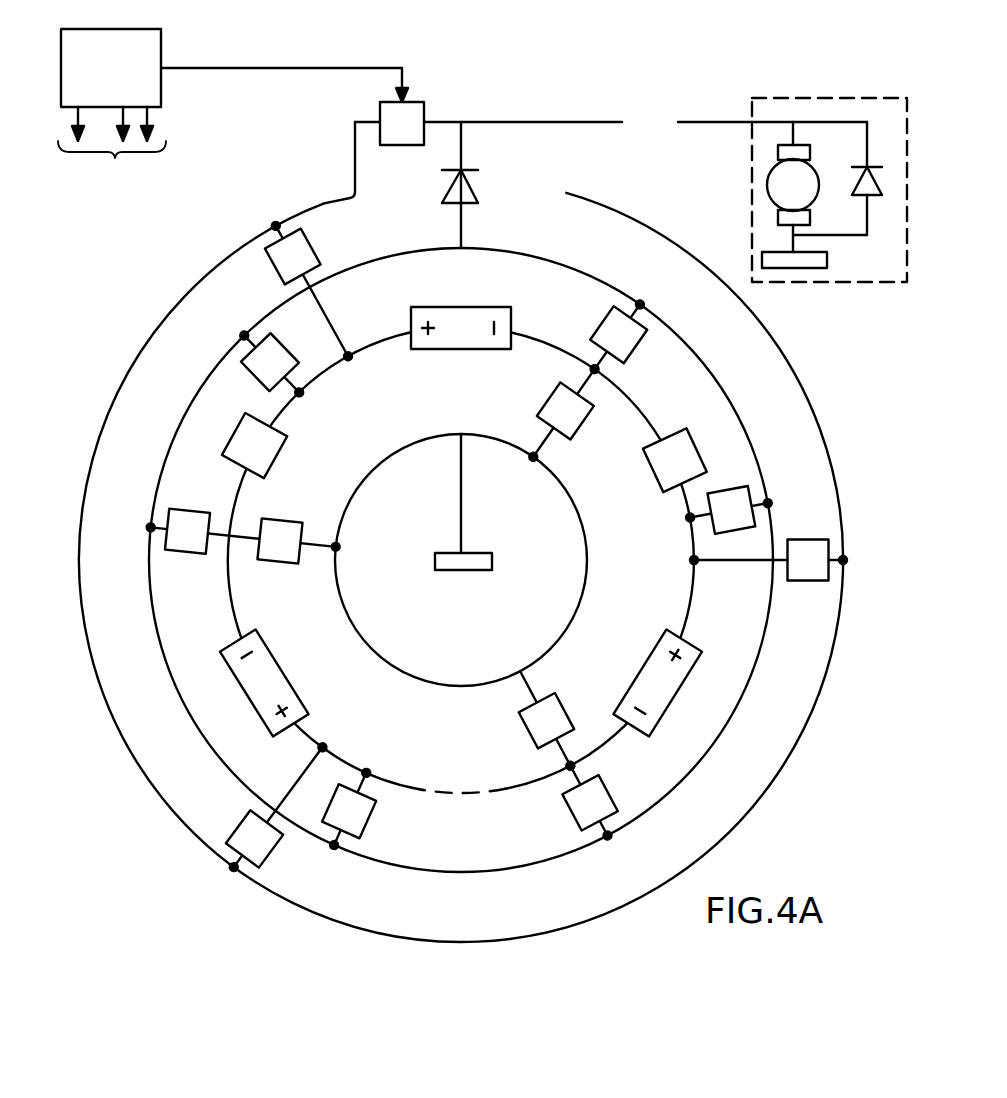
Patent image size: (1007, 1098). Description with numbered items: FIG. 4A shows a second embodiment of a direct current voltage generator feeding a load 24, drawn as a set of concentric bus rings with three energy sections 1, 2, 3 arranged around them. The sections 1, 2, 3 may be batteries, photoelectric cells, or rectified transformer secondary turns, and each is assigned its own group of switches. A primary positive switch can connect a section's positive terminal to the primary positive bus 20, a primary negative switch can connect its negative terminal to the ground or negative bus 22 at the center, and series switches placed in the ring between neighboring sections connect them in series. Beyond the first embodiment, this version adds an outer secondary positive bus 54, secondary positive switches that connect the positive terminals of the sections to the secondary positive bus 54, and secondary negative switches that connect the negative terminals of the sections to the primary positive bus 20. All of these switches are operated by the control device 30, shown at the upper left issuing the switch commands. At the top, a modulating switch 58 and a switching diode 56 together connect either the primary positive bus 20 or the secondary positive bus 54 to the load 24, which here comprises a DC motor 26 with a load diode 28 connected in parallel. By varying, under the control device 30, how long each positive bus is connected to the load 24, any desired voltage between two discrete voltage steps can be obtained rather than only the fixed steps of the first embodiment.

The energy section 1 is at (257, 700).
The energy section 2 is at (470, 307).
The energy section 3 is at (672, 698).
The primary positive bus 20 is at (692, 348).
The ground or negative bus 22 is at (584, 518).
The load 24 is at (842, 282).
The DC motor 26 is at (780, 185).
The load diode 28 is at (870, 168).
The control device 30 is at (152, 52).
The secondary positive bus 54 is at (595, 204).
The switching diode 56 is at (472, 187).
The modulating switch 58 is at (423, 112).